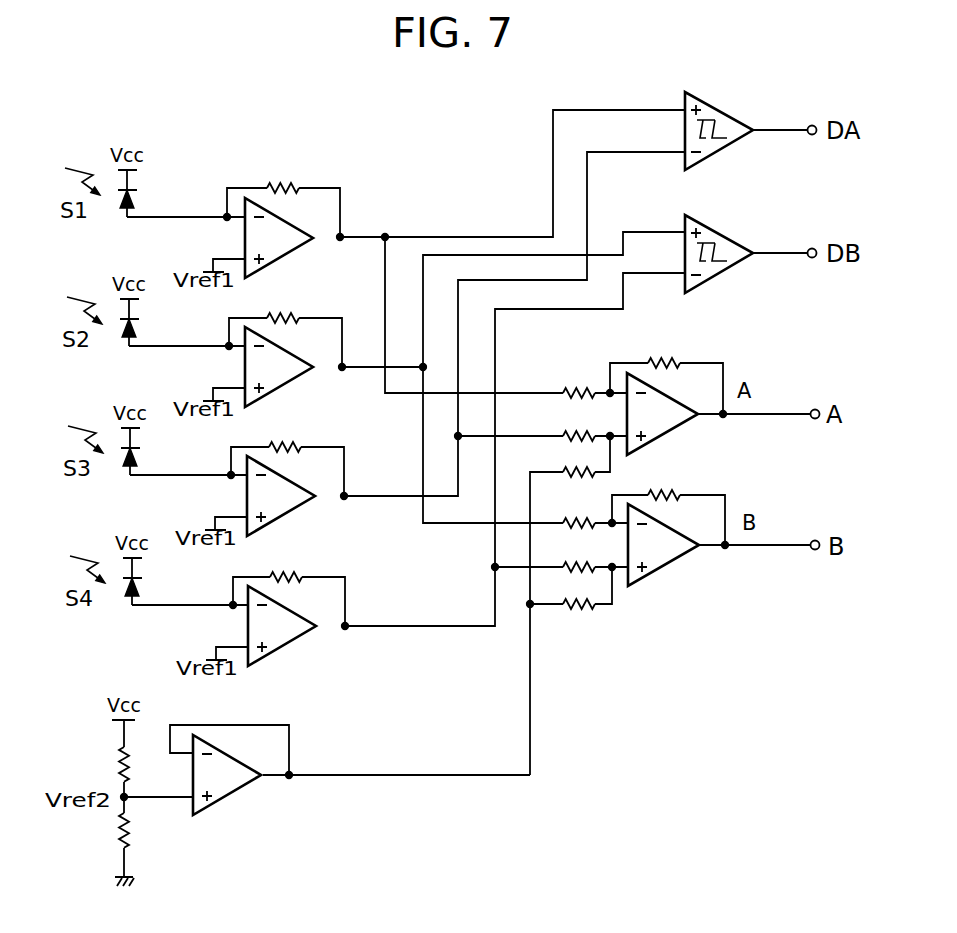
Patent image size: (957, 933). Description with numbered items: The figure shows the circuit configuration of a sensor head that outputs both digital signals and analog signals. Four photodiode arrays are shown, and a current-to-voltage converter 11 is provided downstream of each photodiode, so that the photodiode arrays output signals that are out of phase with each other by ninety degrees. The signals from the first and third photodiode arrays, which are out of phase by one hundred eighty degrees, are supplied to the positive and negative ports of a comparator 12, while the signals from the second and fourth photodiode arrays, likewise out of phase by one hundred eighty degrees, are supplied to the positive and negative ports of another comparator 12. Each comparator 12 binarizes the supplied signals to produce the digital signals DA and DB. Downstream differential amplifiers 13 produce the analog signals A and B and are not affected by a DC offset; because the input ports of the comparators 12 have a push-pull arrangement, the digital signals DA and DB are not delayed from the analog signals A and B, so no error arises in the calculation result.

The current-to-voltage converter 11 is at (290, 255).
The comparator 12 is at (735, 141).
The differential amplifier 13 is at (672, 440).